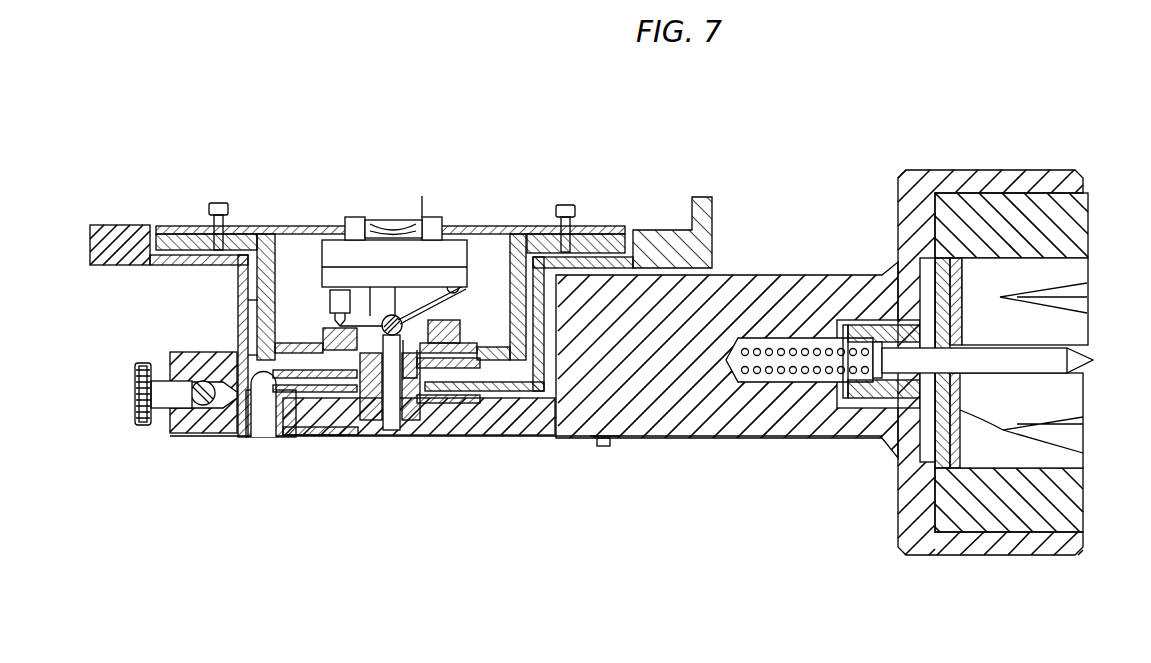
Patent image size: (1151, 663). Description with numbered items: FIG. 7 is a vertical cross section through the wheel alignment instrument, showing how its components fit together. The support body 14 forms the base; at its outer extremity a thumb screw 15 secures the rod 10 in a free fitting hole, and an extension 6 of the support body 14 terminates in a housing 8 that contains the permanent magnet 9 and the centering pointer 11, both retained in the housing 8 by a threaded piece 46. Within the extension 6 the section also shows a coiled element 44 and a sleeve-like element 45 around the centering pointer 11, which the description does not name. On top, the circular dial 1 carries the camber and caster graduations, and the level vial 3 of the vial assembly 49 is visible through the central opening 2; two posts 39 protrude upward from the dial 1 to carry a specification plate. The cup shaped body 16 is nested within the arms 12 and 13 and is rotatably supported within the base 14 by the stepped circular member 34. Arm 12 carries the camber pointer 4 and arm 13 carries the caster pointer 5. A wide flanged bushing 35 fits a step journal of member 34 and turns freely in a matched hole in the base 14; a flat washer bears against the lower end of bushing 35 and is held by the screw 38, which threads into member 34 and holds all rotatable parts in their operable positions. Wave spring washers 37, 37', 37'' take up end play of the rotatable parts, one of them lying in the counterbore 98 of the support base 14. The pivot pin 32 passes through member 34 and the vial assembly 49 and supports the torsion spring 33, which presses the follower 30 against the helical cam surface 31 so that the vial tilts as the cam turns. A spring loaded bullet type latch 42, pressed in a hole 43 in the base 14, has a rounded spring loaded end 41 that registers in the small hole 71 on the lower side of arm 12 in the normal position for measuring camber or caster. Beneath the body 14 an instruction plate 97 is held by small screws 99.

The circular dial 1 is at (600, 228).
The central opening 2 is at (333, 226).
The level vial 3 is at (393, 218).
The camber pointer 4 is at (122, 223).
The caster pointer 5 is at (655, 228).
The extension 6 is at (795, 287).
The housing 8 is at (1005, 170).
The permanent magnet 9 is at (1090, 218).
The rod 10 is at (190, 432).
The centering pointer 11 is at (1088, 358).
The arm 12 is at (237, 285).
The arm 13 is at (548, 400).
The support body 14 is at (512, 437).
The thumb screw 15 is at (135, 397).
The cup shaped body 16 is at (258, 308).
The follower 30 is at (330, 322).
The cam surface 31 is at (422, 322).
The pivot pin 32 is at (390, 316).
The torsion spring 33 is at (432, 313).
The stepped circular member 34 is at (375, 415).
The wide flanged bushing 35 is at (440, 430).
The wave spring washer 37 is at (360, 457).
The wave spring washer 37' is at (448, 434).
The wave spring washer 37'' is at (457, 438).
The screw 38 is at (394, 437).
The posts 39 is at (210, 204).
The rounded spring loaded end 41 is at (252, 440).
The bullet type latch 42 is at (265, 438).
The hole 43 is at (245, 438).
The spring 44 is at (793, 385).
The sleeve 45 is at (893, 400).
The threaded piece 46 is at (1085, 428).
The vial assembly 49 is at (422, 196).
The small hole 71 is at (255, 345).
The instruction plate 97 is at (612, 447).
The counterbore 98 is at (300, 440).
The small screws 99 is at (605, 450).